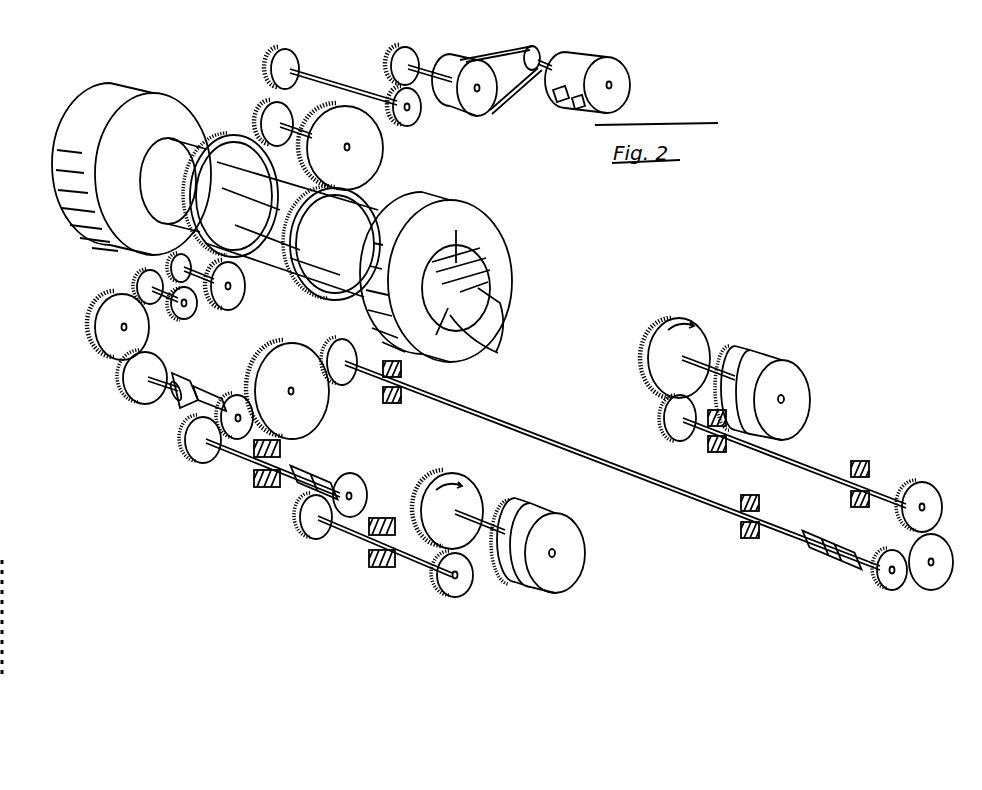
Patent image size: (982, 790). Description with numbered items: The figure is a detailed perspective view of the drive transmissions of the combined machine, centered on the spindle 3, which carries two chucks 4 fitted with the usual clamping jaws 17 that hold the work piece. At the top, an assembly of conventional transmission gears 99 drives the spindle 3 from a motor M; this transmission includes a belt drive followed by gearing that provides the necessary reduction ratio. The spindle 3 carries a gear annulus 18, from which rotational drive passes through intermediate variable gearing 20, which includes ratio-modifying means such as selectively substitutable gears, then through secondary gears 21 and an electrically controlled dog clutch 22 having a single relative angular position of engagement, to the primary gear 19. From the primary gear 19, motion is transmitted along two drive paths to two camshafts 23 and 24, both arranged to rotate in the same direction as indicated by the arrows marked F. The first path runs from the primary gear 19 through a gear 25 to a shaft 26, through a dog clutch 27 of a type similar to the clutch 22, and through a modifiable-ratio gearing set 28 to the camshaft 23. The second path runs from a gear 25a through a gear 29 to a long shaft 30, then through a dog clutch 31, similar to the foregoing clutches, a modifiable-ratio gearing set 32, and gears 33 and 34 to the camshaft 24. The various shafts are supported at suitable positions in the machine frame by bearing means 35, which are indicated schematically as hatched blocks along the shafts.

The chucks 4 is at (80, 92).
The spindle 3 is at (274, 252).
The gear annulus 18 is at (222, 147).
The clamping jaws 17 is at (475, 299).
The assembly of transmission gears 99 is at (358, 55).
The motor M is at (594, 58).
The intermediate variable gearing 20 is at (167, 265).
The secondary gears 21 is at (110, 346).
The dog clutch 22 is at (190, 388).
The primary gear 19 is at (237, 397).
The gear 25a is at (312, 408).
The gear 29 is at (344, 341).
The shaft 30 is at (541, 441).
The bearing means 35 is at (265, 489).
The gear 25 is at (195, 461).
The shaft 26 is at (247, 460).
The dog clutch 27 is at (308, 470).
The modifiable-ratio gearing set 28 is at (352, 486).
The camshaft 23 is at (489, 520).
The gear 34 is at (657, 341).
The camshaft 24 is at (718, 365).
The gear 33 is at (662, 413).
The dog clutch 31 is at (812, 549).
The modifiable-ratio gearing set 32 is at (938, 547).